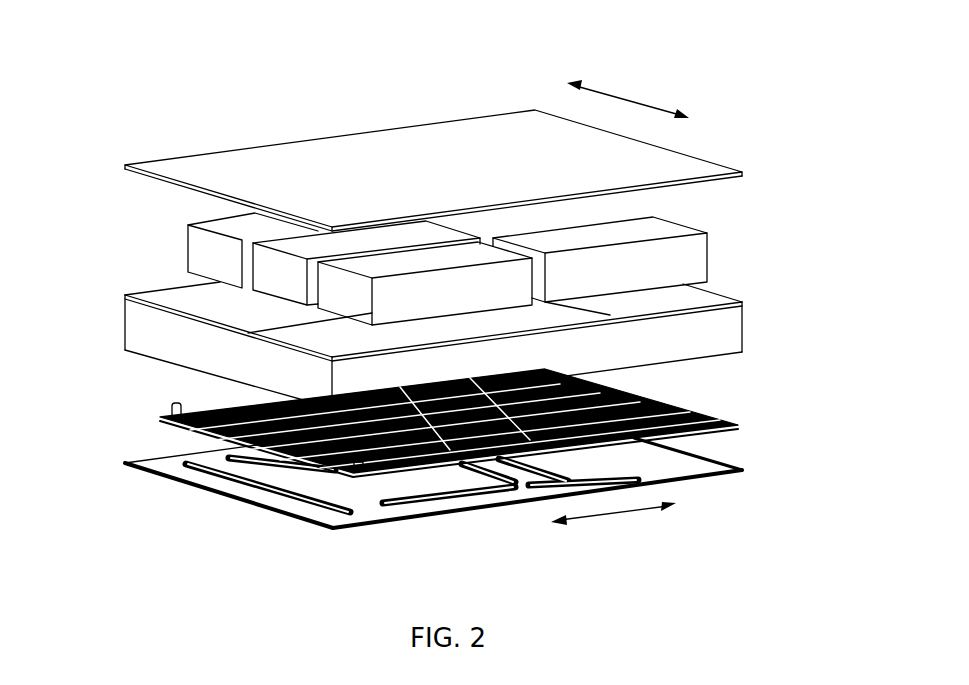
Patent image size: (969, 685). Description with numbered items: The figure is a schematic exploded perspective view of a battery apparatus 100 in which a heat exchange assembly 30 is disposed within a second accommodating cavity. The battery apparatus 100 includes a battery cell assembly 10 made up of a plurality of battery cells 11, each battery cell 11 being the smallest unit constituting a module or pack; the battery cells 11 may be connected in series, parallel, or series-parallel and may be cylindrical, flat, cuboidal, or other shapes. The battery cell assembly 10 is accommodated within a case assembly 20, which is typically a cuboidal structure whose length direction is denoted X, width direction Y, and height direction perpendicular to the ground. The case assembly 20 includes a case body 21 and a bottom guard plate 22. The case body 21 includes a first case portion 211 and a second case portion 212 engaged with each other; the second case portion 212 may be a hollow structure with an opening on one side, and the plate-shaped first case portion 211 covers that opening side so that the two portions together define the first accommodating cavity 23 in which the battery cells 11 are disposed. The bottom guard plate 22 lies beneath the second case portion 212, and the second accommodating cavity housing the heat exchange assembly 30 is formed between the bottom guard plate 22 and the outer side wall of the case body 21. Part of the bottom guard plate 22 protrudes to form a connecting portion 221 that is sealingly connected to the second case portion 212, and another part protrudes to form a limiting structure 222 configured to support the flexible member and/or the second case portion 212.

The battery apparatus 100 is at (334, 54).
The battery cell assembly 10 is at (393, 251).
The battery cell 11 is at (213, 233).
The case assembly 20 is at (479, 315).
The case body 21 is at (479, 259).
The first case portion 211 is at (680, 172).
The second case portion 212 is at (451, 329).
The bottom guard plate 22 is at (436, 504).
The connecting portion 221 is at (262, 503).
The limiting structure 222 is at (190, 468).
The first accommodating cavity 23 is at (168, 292).
The heat exchange assembly 30 is at (132, 418).